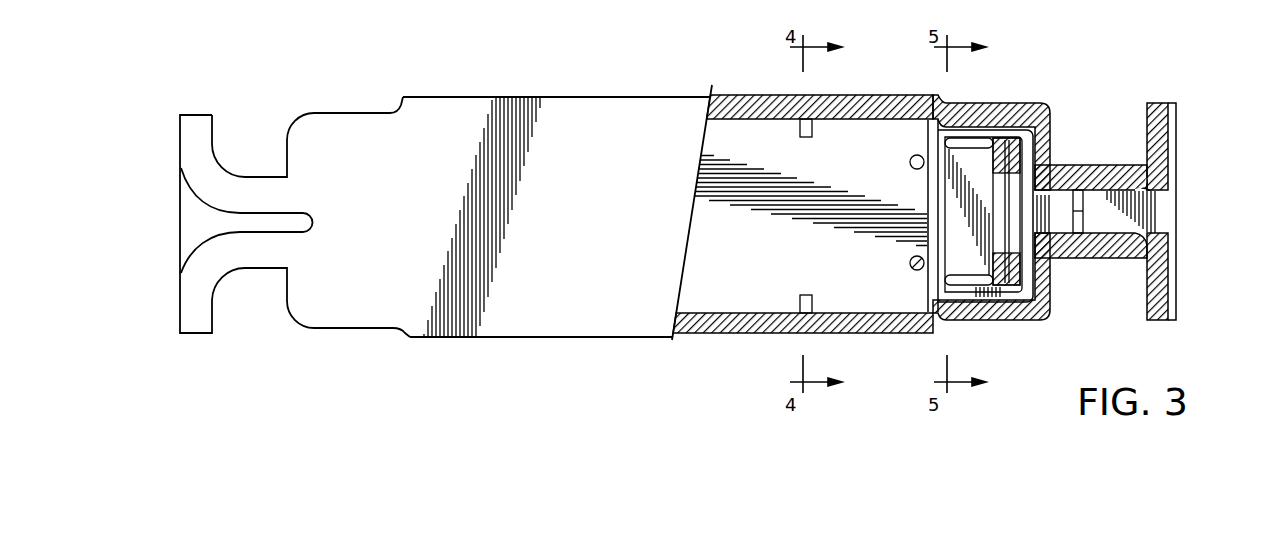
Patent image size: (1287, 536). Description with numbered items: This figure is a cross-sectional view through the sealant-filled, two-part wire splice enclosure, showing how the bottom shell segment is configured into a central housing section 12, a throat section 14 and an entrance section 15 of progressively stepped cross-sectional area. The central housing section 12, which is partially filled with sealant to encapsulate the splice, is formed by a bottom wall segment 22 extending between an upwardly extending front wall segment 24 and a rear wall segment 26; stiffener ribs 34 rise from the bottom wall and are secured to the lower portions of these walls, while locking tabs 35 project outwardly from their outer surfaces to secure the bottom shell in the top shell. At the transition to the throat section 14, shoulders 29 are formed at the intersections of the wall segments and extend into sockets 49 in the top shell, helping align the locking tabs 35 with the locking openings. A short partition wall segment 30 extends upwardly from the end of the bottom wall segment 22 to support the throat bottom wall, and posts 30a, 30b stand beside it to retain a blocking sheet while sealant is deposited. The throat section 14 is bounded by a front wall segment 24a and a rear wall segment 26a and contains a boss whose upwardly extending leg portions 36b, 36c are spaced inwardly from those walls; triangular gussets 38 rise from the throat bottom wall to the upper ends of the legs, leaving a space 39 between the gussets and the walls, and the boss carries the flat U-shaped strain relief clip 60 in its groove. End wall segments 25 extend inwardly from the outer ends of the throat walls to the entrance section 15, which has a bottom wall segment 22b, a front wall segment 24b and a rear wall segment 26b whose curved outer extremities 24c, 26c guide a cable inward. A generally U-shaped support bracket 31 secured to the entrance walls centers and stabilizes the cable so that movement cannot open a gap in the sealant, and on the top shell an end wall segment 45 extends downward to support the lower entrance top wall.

The central housing section 12 is at (745, 142).
The throat section 14 is at (1084, 200).
The entrance section 15 is at (1155, 208).
The bottom wall segment 22 is at (751, 240).
The bottom wall segment 22b is at (1165, 242).
The front wall segment 24 is at (740, 313).
The front wall segment 24a is at (980, 320).
The front wall segment 24b is at (1123, 262).
The curved outer extremity 24c is at (1173, 267).
The end wall segment 25 is at (1060, 171).
The rear wall segment 26 is at (860, 120).
The rear wall segment 26a is at (983, 103).
The rear wall segment 26b is at (1135, 189).
The curved outer extremity 26c is at (1155, 162).
The shoulder 29 is at (932, 120).
The partition wall segment 30 is at (940, 283).
The post 30a is at (910, 262).
The post 30b is at (910, 163).
The support bracket 31 is at (1106, 168).
The stiffener rib 34 is at (800, 133).
The locking tab 35 is at (812, 95).
The leg portion 36b is at (1025, 283).
The leg portion 36c is at (1033, 110).
The gusset 38 is at (982, 243).
The space 39 is at (1047, 120).
The end wall segment 45 is at (1043, 158).
The socket 49 is at (920, 95).
The strain relief clip 60 is at (995, 178).